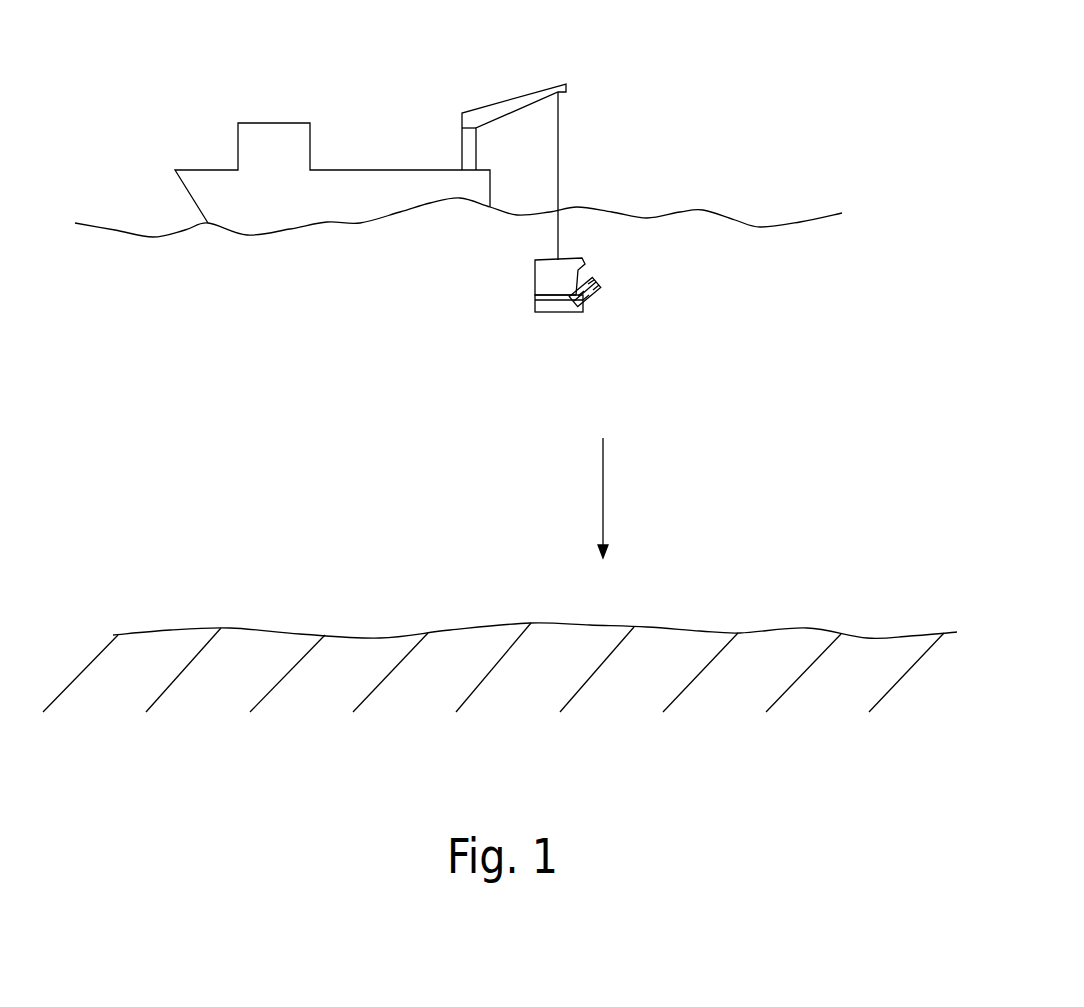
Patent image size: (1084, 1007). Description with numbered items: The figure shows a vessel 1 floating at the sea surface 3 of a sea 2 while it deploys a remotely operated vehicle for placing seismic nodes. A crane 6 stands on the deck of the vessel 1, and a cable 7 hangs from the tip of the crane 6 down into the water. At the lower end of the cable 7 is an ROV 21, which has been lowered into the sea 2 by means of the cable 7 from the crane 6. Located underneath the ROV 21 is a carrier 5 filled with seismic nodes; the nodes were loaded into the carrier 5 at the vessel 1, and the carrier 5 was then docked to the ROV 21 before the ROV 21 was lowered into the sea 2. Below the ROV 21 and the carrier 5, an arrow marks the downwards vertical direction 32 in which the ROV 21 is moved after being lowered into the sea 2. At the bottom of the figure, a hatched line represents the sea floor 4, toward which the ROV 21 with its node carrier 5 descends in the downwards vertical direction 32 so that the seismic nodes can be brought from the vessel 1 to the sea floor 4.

The vessel 1 is at (360, 185).
The sea 2 is at (674, 381).
The sea surface 3 is at (684, 210).
The sea floor 4 is at (672, 627).
The carrier 5 is at (545, 305).
The crane 6 is at (486, 115).
The cable 7 is at (560, 128).
The ROV 21 is at (545, 272).
The downwards vertical direction 32 is at (617, 498).